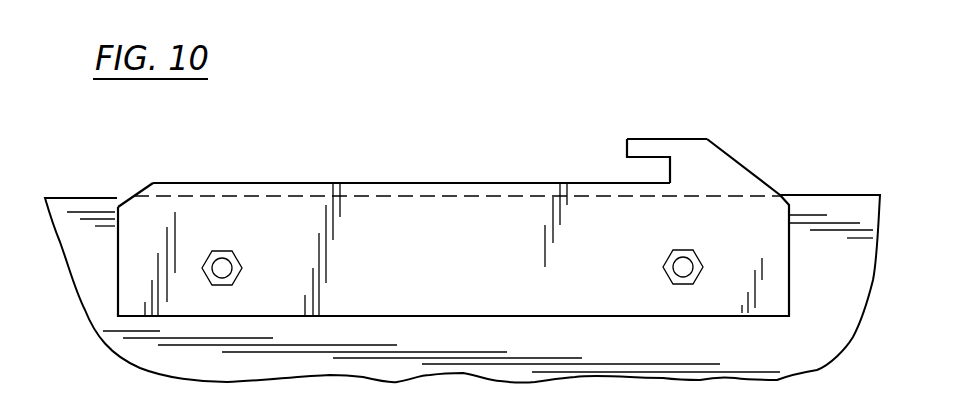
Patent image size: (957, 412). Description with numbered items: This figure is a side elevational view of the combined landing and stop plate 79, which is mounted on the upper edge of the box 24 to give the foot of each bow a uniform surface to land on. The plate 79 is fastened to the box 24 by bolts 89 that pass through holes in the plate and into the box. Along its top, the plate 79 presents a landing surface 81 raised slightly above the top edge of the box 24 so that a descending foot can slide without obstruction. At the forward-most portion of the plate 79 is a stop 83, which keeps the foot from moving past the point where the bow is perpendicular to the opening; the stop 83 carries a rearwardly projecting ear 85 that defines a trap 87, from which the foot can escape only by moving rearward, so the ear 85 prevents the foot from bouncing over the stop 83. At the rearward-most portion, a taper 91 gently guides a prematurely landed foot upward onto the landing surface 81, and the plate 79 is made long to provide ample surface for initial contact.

The box 24 is at (847, 280).
The combined landing and stop plate 79 is at (458, 275).
The landing surface 81 is at (362, 182).
The stop 83 is at (693, 163).
The ear 85 is at (648, 150).
The trap 87 is at (637, 172).
The bolts 89 is at (702, 252).
The taper 91 is at (140, 197).